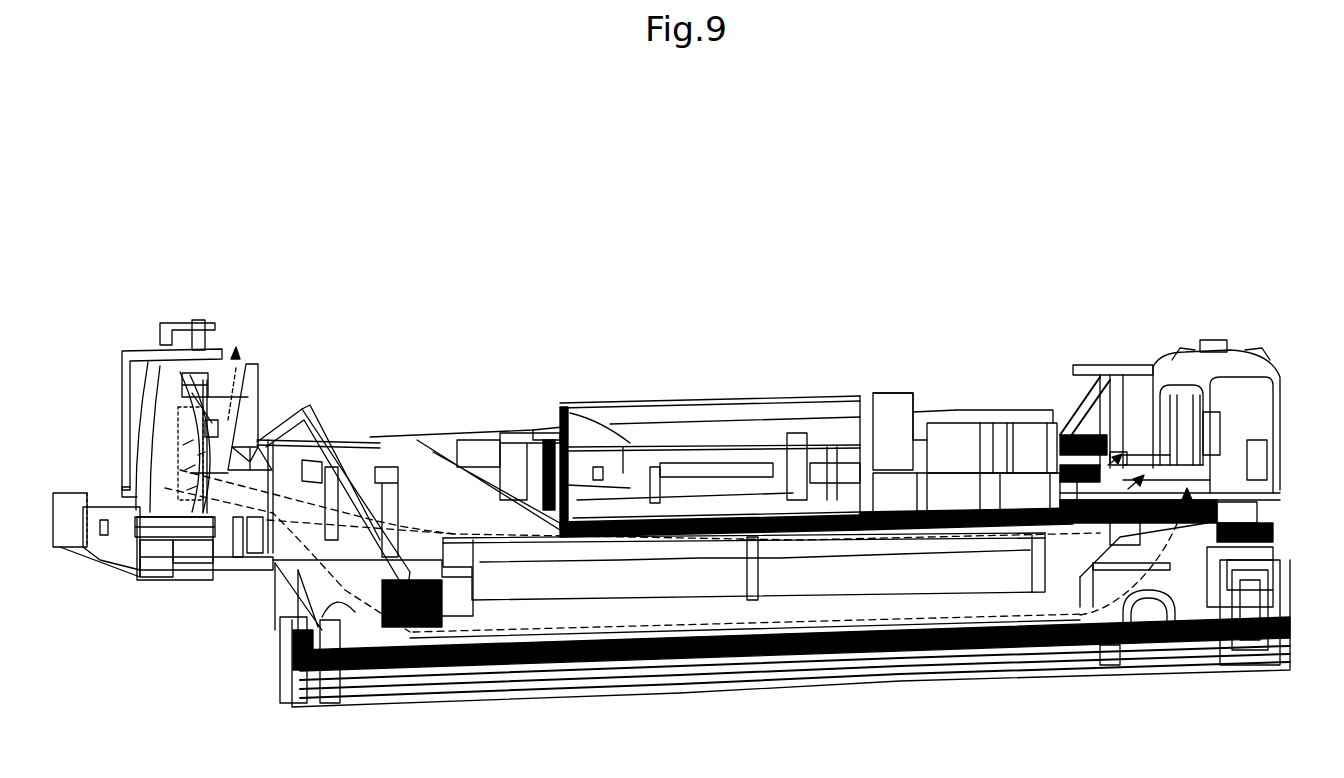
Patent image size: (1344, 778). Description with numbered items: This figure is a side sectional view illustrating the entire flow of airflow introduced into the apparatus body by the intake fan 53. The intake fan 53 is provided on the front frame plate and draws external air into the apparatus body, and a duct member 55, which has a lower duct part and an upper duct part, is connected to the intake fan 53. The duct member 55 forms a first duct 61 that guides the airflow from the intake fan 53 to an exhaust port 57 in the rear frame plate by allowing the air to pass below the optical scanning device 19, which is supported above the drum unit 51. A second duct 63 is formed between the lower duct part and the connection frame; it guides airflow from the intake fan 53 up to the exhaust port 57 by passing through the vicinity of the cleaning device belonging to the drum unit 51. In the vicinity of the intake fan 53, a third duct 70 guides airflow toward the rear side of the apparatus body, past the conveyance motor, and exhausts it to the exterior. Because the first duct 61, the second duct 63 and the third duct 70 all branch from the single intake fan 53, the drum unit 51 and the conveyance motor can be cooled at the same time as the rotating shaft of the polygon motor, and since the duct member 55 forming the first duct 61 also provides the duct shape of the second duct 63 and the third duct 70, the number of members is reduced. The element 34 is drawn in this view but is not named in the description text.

The optical scanning device 19 is at (792, 381).
The sheet tray 34 is at (658, 468).
The drum unit 51 is at (1145, 675).
The intake fan 53 is at (137, 433).
The duct member 55 is at (765, 582).
The exhaust port 57 is at (1260, 437).
The first duct 61 is at (498, 514).
The second duct 63 is at (585, 630).
The third duct 70 is at (250, 396).